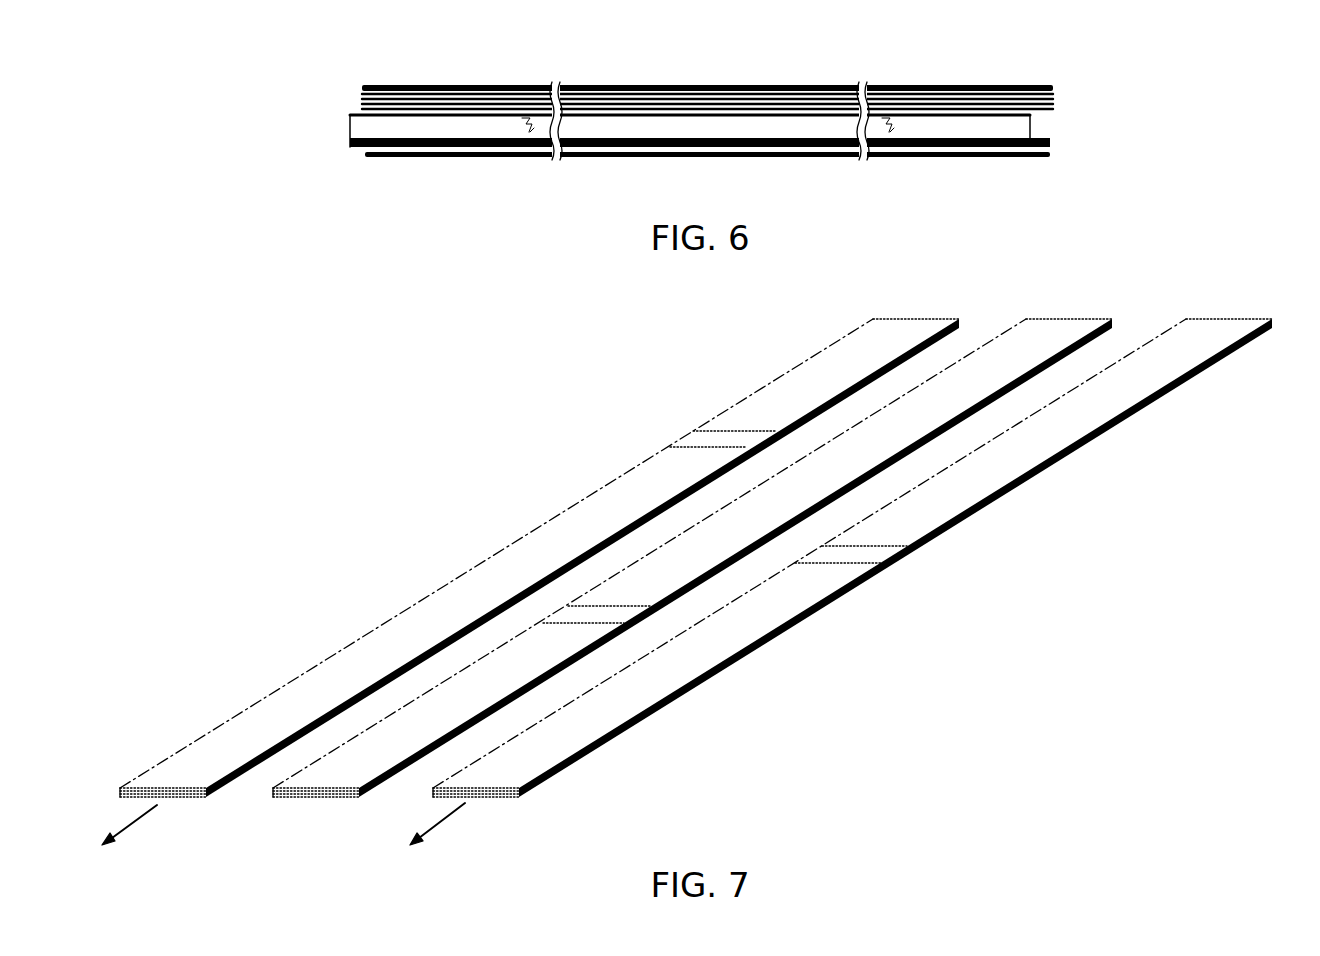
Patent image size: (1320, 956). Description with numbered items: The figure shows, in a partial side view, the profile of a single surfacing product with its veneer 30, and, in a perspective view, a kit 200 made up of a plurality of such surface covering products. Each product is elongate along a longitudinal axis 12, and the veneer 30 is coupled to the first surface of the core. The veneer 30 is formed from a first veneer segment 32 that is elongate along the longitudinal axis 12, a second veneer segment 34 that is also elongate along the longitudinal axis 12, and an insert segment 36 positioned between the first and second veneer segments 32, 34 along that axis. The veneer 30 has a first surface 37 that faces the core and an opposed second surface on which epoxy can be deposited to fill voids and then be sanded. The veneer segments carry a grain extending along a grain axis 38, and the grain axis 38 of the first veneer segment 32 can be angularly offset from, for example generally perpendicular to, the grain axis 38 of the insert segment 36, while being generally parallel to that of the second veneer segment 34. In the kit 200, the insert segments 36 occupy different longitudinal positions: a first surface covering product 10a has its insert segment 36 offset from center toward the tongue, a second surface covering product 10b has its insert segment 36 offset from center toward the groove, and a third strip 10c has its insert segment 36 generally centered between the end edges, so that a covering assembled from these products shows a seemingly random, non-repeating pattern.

In FIG. 6, the veneer 30 is at (787, 88).
In FIG. 6, the first veneer segment 32 is at (993, 86).
In FIG. 7, the first veneer segment 32 is at (340, 652).
In FIG. 6, the second veneer segment 34 is at (562, 84).
In FIG. 7, the second veneer segment 34 is at (773, 393).
In FIG. 6, the insert segment 36 is at (707, 88).
In FIG. 7, the insert segment 36 is at (693, 432).
In FIG. 6, the first surface 37 is at (757, 95).
In FIG. 6, the grain axis 38 is at (798, 83).
In FIG. 7, the kit 200 is at (428, 422).
In FIG. 7, the first surface covering product 10a is at (840, 352).
In FIG. 7, the second surface covering product 10b is at (1040, 338).
In FIG. 7, the third strip 10c is at (1075, 415).
In FIG. 7, the longitudinal axis 12 is at (960, 268).